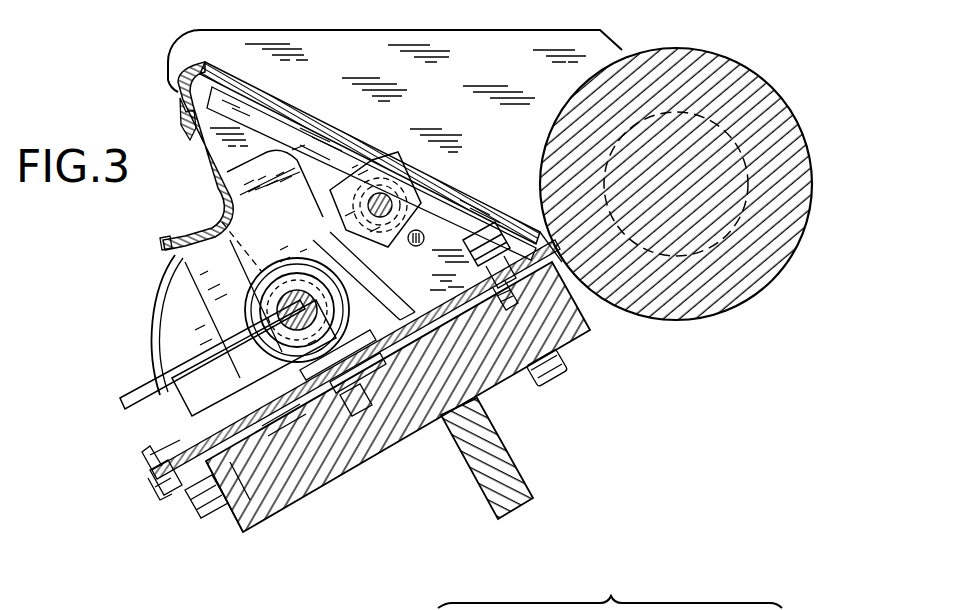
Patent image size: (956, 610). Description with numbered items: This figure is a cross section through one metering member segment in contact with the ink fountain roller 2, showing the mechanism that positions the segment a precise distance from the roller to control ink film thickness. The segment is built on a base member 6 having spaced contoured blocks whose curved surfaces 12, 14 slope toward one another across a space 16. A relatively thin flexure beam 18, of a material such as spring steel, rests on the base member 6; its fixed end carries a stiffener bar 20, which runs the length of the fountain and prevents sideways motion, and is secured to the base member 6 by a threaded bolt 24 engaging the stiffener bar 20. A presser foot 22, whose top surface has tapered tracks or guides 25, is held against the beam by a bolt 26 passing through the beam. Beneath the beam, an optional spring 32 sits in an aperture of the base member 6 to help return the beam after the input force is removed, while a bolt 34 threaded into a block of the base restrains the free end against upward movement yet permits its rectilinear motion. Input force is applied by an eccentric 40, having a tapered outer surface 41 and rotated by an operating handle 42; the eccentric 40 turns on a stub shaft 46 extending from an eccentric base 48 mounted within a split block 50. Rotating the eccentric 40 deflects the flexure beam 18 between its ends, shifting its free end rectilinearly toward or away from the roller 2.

The ink fountain roller 2 is at (683, 306).
The base member 6 is at (286, 440).
The curved surface 12 is at (258, 430).
The curved surface 14 is at (420, 337).
The space 16 is at (388, 385).
The flexure beam 18 is at (236, 430).
The stiffener bar 20 is at (168, 490).
The presser foot 22 is at (318, 440).
The threaded bolt 24 is at (200, 518).
The tracks or guides 25 is at (412, 336).
The bolt 26 is at (357, 392).
The spring 32 is at (352, 398).
The bolt 34 is at (480, 240).
The eccentric 40 is at (292, 284).
The tapered outer surface 41 is at (250, 318).
The operating handle 42 is at (122, 408).
The stub shaft 46 is at (305, 313).
The eccentric base 48 is at (222, 222).
The split block 50 is at (240, 304).